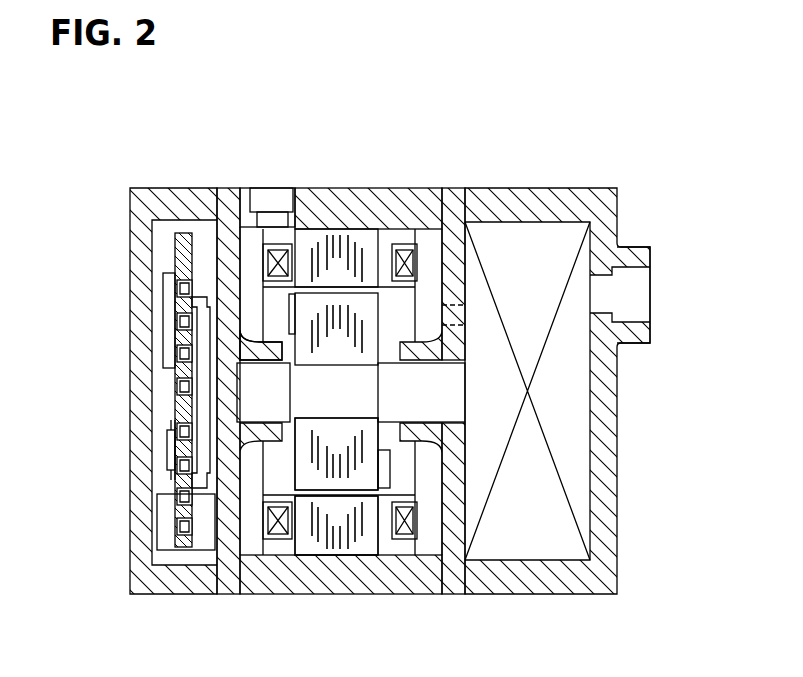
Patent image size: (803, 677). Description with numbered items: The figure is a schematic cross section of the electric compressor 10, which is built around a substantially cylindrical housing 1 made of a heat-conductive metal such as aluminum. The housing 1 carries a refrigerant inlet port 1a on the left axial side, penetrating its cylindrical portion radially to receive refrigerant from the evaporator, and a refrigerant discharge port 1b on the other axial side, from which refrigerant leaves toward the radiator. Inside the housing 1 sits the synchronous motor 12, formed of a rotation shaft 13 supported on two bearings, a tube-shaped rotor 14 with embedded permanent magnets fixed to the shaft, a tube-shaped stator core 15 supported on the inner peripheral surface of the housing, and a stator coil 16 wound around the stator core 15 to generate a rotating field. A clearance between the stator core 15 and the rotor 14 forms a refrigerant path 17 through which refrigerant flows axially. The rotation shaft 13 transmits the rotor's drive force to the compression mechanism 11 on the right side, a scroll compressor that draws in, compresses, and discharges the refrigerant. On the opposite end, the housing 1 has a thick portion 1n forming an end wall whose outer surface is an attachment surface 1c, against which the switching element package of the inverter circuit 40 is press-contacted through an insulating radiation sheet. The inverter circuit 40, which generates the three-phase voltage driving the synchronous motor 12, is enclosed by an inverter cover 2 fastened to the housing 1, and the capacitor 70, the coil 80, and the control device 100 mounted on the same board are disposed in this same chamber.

The electric compressor 10 is at (614, 164).
The housing 1 is at (424, 207).
The refrigerant inlet port 1a is at (270, 188).
The refrigerant discharge port 1b is at (650, 293).
The attachment surface 1c is at (214, 310).
The thick portion 1n is at (237, 490).
The inverter cover 2 is at (145, 392).
The compression mechanism 11 is at (573, 378).
The synchronous motor 12 is at (348, 228).
The rotation shaft 13 is at (450, 410).
The rotor 14 is at (368, 478).
The stator core 15 is at (342, 540).
The stator coil 16 is at (277, 532).
The refrigerant path 17 is at (318, 492).
The inverter circuit 40 is at (212, 475).
The capacitor 70 is at (162, 515).
The coil 80 is at (190, 543).
The control device 100 is at (163, 313).